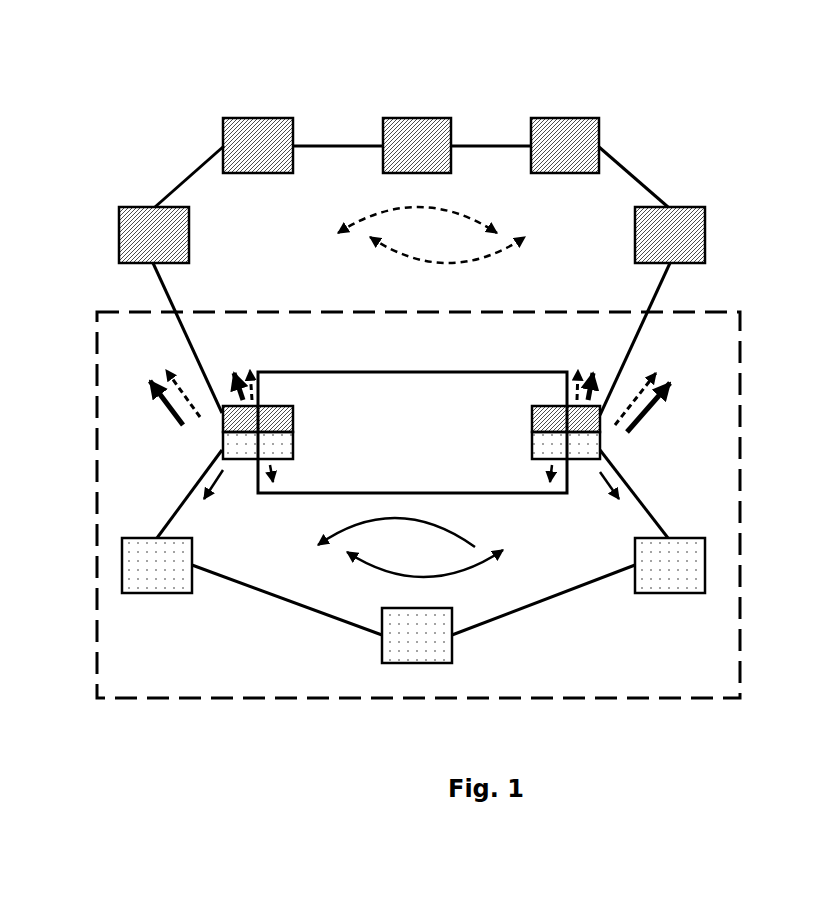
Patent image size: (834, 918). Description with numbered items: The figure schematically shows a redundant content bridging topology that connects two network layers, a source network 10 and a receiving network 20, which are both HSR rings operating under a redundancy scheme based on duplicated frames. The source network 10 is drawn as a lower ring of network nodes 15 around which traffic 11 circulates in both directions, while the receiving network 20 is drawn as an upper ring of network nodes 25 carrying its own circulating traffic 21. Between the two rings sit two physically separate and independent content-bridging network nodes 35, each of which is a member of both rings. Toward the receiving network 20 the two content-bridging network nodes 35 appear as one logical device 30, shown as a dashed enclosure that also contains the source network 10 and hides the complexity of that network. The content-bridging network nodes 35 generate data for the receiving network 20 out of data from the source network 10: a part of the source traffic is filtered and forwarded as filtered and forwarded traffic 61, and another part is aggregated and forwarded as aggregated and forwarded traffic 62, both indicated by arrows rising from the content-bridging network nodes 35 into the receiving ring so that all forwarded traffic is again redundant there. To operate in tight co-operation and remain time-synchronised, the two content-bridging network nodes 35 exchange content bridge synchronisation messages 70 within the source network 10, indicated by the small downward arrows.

The source network 10 is at (532, 620).
The traffic within the source network 11 is at (410, 547).
The network node in the source network 15 is at (135, 593).
The receiving network 20 is at (668, 158).
The traffic within the receiving network 21 is at (431, 235).
The network node in the receiving network 25 is at (259, 118).
The logical device for the receiving network 30 is at (740, 427).
The content-bridging network node 35 is at (293, 423).
The filtered and forwarded traffic 61 is at (413, 384).
The aggregated and forwarded traffic 62 is at (420, 389).
The content bridge synchronisation message 70 is at (407, 495).